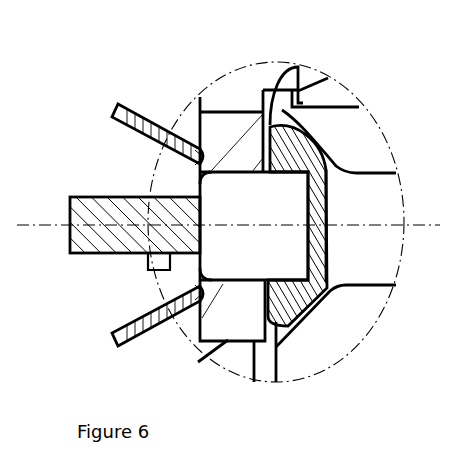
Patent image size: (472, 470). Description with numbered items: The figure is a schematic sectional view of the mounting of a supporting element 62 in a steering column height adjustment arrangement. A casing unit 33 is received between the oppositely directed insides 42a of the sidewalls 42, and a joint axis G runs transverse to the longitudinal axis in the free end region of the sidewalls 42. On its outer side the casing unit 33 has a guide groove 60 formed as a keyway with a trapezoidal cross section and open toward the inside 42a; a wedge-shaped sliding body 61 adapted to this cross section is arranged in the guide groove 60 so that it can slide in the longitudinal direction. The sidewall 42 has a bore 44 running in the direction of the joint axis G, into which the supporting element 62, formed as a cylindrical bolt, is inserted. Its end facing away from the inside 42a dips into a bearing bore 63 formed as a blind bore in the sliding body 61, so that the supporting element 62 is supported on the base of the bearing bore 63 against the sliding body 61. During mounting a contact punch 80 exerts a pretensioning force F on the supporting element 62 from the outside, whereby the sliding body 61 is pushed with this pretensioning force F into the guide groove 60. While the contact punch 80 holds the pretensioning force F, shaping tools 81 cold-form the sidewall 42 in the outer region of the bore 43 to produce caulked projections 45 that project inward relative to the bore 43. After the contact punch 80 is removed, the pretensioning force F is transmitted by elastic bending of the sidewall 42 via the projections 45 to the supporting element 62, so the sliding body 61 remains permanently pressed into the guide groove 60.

The casing unit 33 is at (363, 128).
The sidewall 42 is at (290, 345).
The inside of sidewall 42a is at (271, 128).
The bore 43 is at (227, 163).
The bore 44 is at (220, 282).
The projections 45 is at (198, 166).
The guide groove 60 is at (293, 143).
The sliding body 61 is at (305, 307).
The supporting element 62 is at (243, 197).
The bearing bore 63 is at (318, 277).
The contact punch 80 is at (103, 208).
The shaping tools 81 is at (143, 118).
The pretensioning force F is at (17, 225).
The joint axis G is at (406, 224).